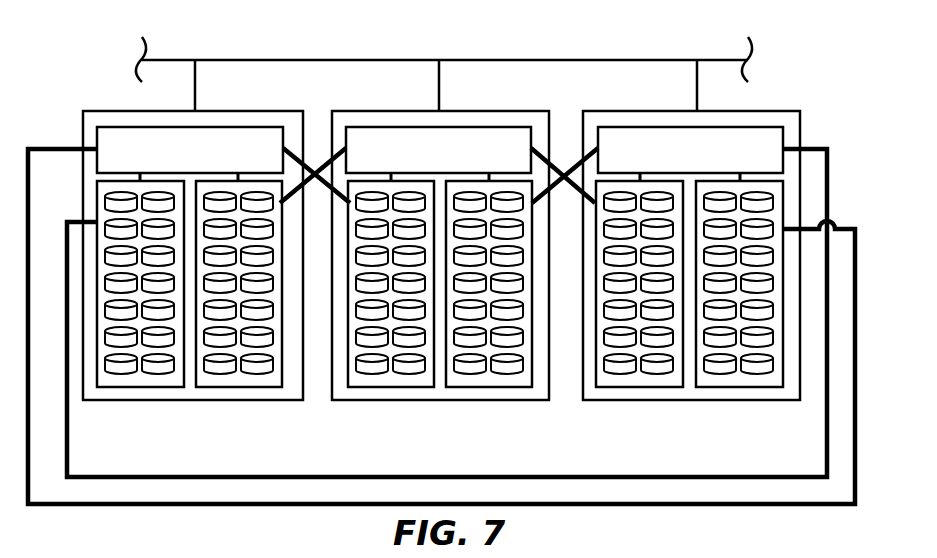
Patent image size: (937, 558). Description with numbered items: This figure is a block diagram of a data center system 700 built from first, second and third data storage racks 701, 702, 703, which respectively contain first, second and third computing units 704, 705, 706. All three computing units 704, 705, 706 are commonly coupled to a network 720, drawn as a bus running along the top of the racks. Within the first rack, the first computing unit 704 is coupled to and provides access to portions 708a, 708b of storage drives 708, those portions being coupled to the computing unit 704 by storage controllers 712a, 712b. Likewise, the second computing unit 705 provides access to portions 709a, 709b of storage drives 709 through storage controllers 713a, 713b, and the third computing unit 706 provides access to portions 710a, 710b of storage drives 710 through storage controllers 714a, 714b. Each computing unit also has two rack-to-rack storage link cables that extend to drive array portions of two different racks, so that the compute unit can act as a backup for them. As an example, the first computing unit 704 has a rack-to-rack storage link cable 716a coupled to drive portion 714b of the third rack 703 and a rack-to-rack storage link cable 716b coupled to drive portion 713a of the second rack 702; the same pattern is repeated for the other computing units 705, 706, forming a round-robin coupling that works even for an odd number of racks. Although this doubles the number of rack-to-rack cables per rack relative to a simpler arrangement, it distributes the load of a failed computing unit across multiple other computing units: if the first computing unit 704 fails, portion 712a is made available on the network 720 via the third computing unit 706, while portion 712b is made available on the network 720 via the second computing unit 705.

The data center system 700 is at (872, 86).
The first data storage rack 701 is at (458, 112).
The second data storage rack 702 is at (719, 110).
The third data storage rack 703 is at (215, 108).
The first computing unit 704 is at (497, 126).
The second computing unit 705 is at (770, 126).
The third computing unit 706 is at (256, 126).
The storage drives 708 is at (440, 327).
The portion of storage drives 708a is at (394, 392).
The portion of storage drives 708b is at (480, 392).
The storage drives 709 is at (689, 324).
The portion of storage drives 709a is at (644, 392).
The portion of storage drives 709b is at (736, 392).
The storage drives 710 is at (189, 324).
The portion of storage drives 710a is at (154, 392).
The portion of storage drives 710b is at (245, 392).
The storage controller 712a is at (349, 383).
The storage controller 712b is at (535, 383).
The storage controller 713a is at (600, 380).
The storage controller 713b is at (783, 380).
The storage controller 714a is at (110, 383).
The storage controller 714b is at (283, 383).
The rack-to-rack storage link cable 716a is at (322, 170).
The rack-to-rack storage link cable 716b is at (560, 170).
The network 720 is at (375, 58).